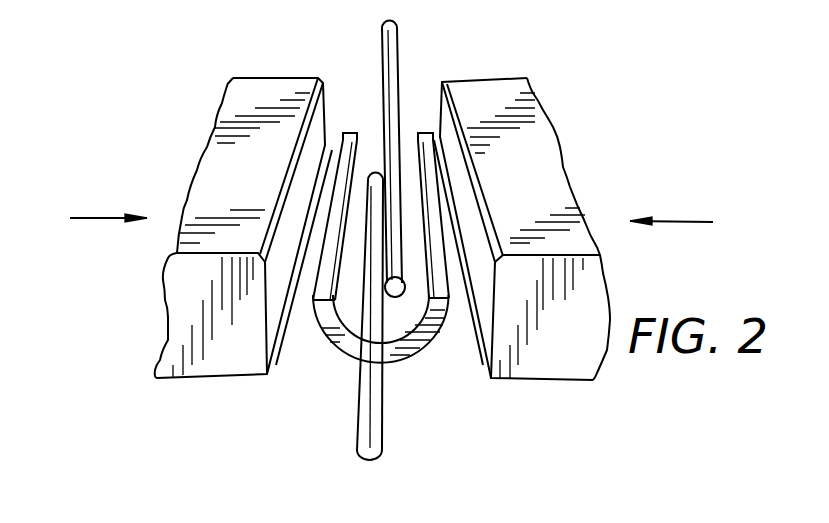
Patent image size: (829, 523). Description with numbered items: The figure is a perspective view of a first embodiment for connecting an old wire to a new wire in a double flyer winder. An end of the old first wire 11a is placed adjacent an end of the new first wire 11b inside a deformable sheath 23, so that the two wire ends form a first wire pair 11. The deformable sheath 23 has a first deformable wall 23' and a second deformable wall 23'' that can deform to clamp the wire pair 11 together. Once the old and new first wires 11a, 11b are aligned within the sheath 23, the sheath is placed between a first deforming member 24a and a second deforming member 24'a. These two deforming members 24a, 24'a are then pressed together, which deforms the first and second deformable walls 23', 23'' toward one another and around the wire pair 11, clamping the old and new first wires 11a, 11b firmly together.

The first wire pair 11 is at (398, 243).
The old first wire 11a is at (393, 70).
The new first wire 11b is at (383, 428).
The deformable sheath 23 is at (377, 350).
The first deformable wall 23' is at (335, 163).
The second deformable wall 23'' is at (470, 167).
The first deforming member 24a is at (232, 122).
The second deforming member 24'a is at (529, 229).